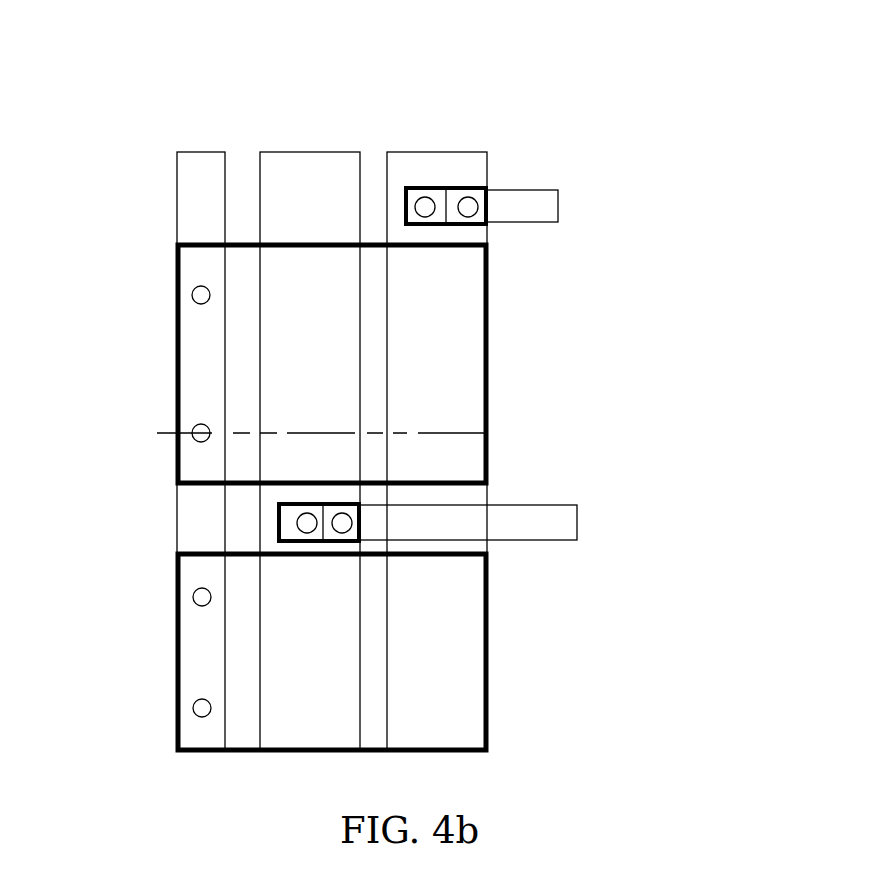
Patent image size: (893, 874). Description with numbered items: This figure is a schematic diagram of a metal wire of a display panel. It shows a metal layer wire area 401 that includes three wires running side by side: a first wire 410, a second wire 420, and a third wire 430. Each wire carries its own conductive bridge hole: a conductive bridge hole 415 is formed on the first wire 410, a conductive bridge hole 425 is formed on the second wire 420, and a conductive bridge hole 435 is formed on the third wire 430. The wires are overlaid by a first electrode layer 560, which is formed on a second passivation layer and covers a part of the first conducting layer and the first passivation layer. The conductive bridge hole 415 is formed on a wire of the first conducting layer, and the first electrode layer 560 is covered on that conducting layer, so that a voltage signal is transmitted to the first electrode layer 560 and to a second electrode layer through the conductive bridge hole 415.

The metal layer wire area 401 is at (117, 147).
The first wire 410 is at (196, 152).
The conductive bridge hole 415 is at (192, 297).
The second wire 420 is at (304, 152).
The conductive bridge hole 425 is at (345, 526).
The third wire 430 is at (430, 152).
The conductive bridge hole 435 is at (487, 222).
The first electrode layer 560 is at (487, 373).